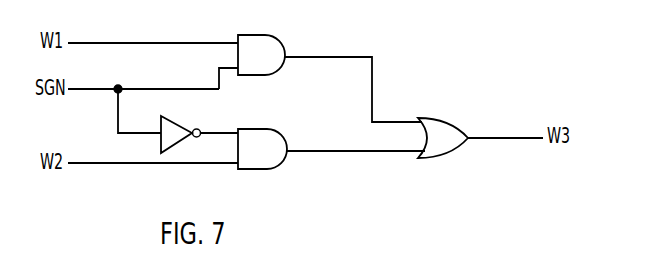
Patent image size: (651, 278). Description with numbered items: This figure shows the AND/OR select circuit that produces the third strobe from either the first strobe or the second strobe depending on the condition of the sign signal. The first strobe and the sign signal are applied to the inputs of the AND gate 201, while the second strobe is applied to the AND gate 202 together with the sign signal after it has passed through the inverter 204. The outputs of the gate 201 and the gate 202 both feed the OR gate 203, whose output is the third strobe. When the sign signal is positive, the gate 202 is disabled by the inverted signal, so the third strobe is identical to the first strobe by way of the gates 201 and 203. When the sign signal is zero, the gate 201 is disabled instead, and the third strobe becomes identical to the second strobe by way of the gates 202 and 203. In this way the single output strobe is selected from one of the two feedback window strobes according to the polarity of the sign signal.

The gate 201 is at (292, 30).
The gate 202 is at (265, 128).
The gate 203 is at (473, 110).
The inverter 204 is at (178, 122).